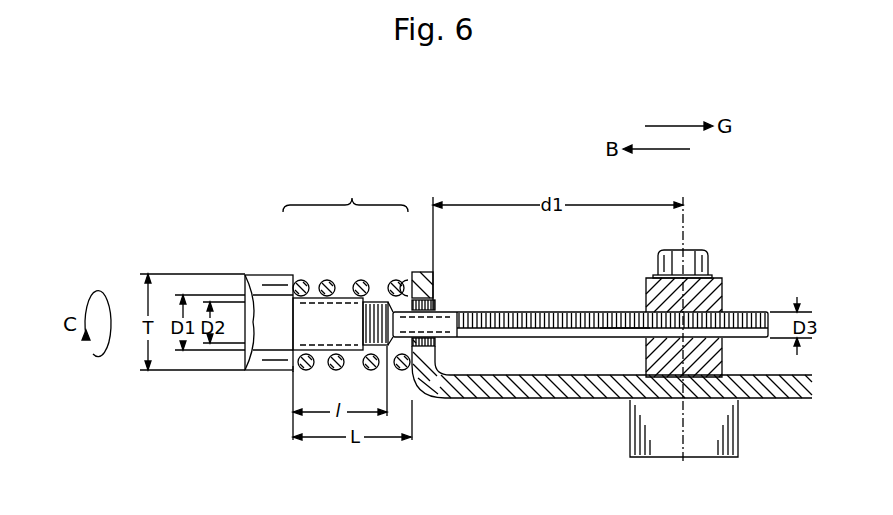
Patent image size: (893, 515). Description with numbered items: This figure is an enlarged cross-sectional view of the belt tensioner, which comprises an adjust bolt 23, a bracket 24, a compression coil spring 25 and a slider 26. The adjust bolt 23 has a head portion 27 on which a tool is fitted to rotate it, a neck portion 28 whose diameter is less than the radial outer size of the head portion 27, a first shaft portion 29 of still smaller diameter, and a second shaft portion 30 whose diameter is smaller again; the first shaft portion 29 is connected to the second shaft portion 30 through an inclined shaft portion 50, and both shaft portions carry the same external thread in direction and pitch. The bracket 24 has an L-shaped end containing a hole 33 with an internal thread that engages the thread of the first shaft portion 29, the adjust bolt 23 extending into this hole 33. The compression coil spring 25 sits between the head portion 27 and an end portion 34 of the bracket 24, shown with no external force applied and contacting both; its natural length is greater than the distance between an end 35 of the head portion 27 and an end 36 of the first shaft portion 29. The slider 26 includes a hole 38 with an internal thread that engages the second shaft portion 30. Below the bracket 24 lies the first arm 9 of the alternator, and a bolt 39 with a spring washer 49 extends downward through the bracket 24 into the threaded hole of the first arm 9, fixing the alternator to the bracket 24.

The first arm 9 is at (738, 407).
The adjust bolt 23 is at (345, 189).
The bracket 24 is at (547, 399).
The compression coil spring 25 is at (308, 370).
The slider 26 is at (723, 297).
The head portion 27 is at (277, 272).
The neck portion 28 is at (345, 295).
The first shaft portion 29 is at (377, 301).
The second shaft portion 30 is at (490, 307).
The hole 33 is at (436, 304).
The end portion 34 is at (420, 270).
The end of head portion 35 is at (292, 372).
The end of first shaft portion 36 is at (392, 350).
The hole 38 is at (628, 325).
The bolt 39 is at (689, 251).
The spring washer 49 is at (706, 275).
The inclined shaft portion 50 is at (391, 301).